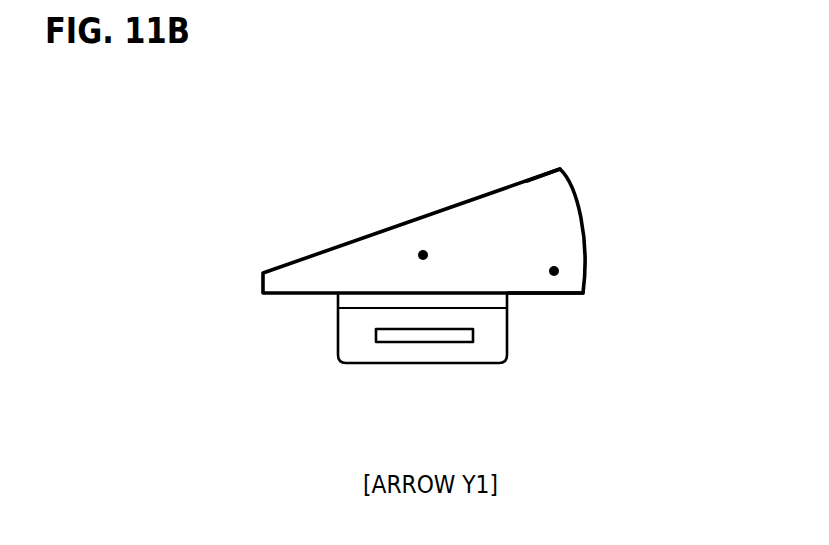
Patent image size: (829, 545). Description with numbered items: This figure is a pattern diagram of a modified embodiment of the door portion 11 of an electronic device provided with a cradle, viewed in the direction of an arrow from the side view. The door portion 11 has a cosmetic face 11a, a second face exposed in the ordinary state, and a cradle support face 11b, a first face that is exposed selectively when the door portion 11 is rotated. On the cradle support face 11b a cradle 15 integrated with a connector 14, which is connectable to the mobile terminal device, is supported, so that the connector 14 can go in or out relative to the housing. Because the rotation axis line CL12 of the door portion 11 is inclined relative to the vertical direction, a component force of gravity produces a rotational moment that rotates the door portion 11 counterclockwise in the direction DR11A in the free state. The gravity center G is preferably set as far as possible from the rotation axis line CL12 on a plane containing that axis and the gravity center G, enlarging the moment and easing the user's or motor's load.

The door portion 11 is at (308, 257).
The cosmetic face 11a is at (547, 294).
The cradle support face 11b is at (527, 181).
The connector 14 is at (400, 343).
The cradle 15 is at (480, 365).
The rotation axis line CL12 is at (414, 258).
The gravity center G is at (556, 262).
The direction DR11A is at (528, 145).